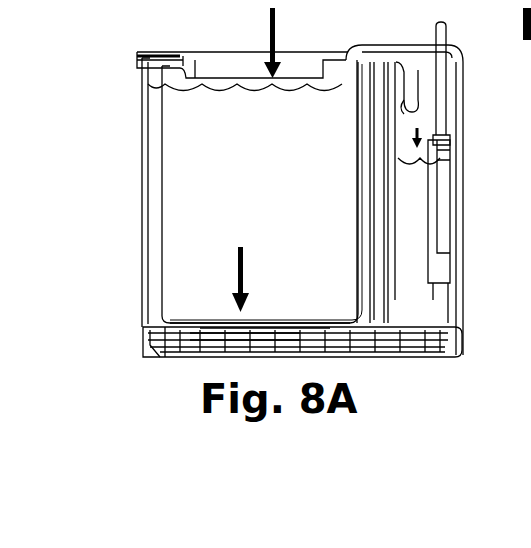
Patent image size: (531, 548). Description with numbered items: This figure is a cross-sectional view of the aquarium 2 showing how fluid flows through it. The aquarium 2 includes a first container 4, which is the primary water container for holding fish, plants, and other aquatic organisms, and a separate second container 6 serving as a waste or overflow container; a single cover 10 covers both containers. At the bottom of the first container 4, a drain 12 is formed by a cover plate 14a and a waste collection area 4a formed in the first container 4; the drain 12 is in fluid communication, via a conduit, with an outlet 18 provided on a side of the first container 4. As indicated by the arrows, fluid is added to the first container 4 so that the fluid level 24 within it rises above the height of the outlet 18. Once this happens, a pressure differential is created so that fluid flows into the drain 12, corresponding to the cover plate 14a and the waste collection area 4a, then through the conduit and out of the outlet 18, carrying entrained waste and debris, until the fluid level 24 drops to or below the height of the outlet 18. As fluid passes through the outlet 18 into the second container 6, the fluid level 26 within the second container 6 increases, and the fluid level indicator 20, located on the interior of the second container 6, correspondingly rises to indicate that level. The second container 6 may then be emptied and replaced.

The aquarium 2 is at (86, 53).
The first container 4 is at (150, 172).
The waste collection area 4a is at (250, 345).
The second container 6 is at (463, 272).
The cover 10 is at (168, 60).
The drain 12 is at (242, 330).
The cover plate 14a is at (245, 338).
The outlet 18 is at (414, 108).
The fluid level indicator 20 is at (446, 125).
The fluid level 24 is at (162, 86).
The fluid level 26 is at (452, 156).